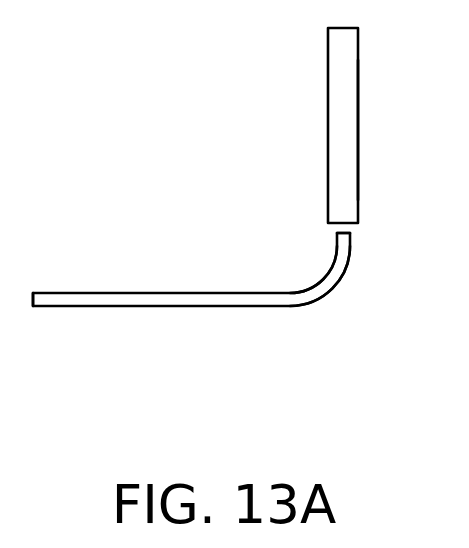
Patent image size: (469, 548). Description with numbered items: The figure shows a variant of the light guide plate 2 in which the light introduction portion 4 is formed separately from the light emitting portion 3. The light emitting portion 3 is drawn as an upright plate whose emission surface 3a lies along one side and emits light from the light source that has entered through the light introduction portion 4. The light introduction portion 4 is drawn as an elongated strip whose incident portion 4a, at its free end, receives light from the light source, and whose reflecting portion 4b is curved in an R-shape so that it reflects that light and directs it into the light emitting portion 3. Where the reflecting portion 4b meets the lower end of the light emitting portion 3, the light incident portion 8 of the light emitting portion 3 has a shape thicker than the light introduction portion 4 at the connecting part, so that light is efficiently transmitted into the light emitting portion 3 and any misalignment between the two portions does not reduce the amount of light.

The light guide plate 2 is at (182, 66).
The light emitting portion 3 is at (323, 168).
The emission surface 3a is at (358, 137).
The light introduction portion 4 is at (127, 290).
The incident portion 4a is at (31, 299).
The reflecting portion 4b is at (330, 278).
The light incident portion 8 is at (353, 229).